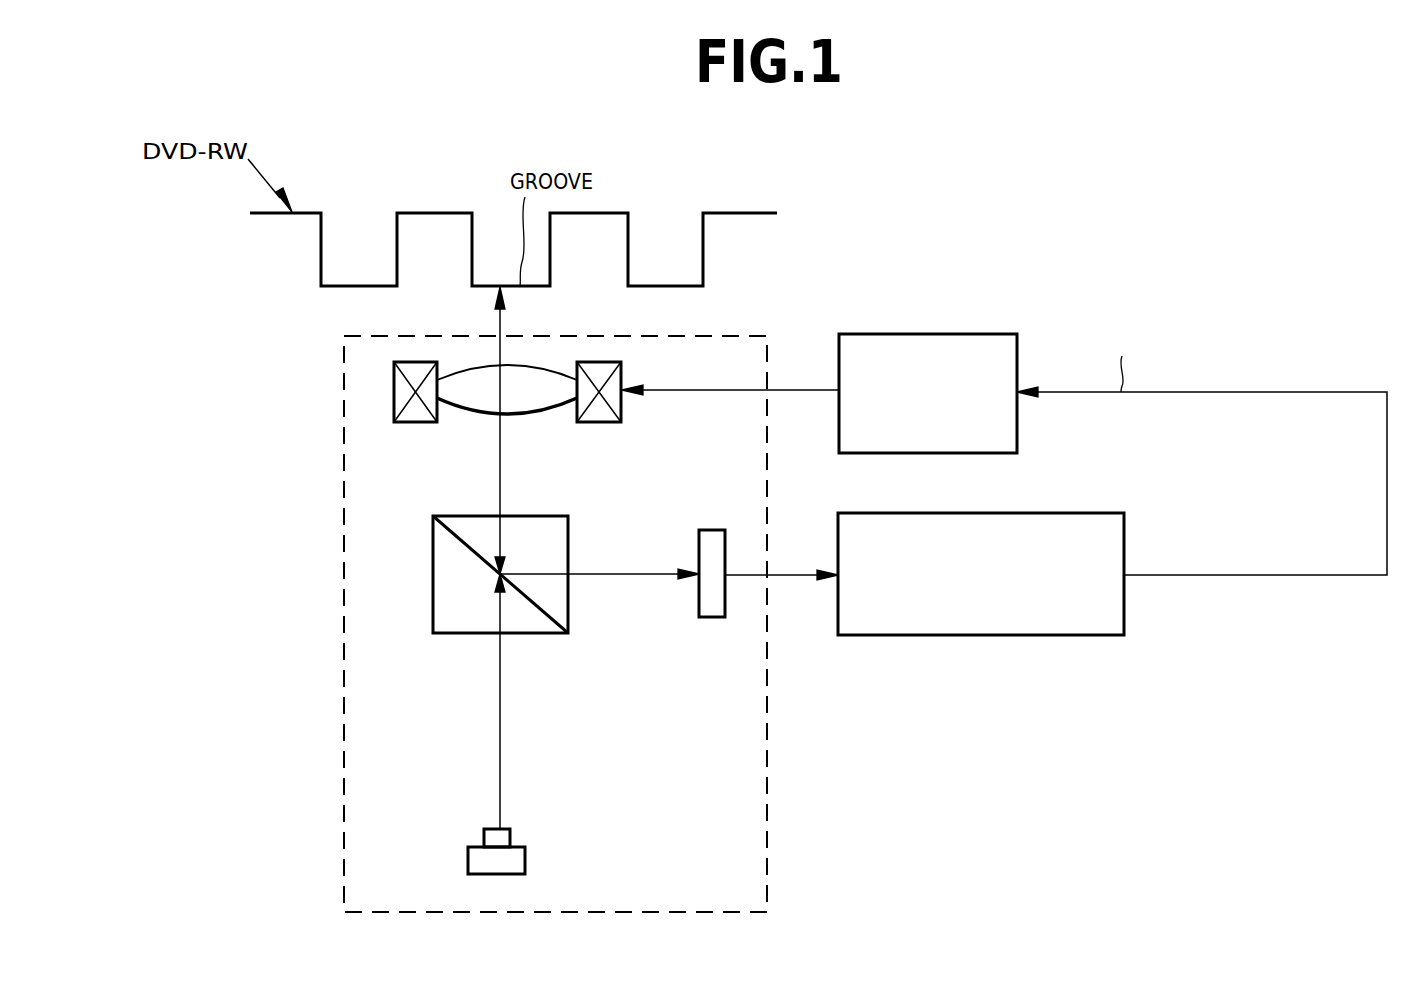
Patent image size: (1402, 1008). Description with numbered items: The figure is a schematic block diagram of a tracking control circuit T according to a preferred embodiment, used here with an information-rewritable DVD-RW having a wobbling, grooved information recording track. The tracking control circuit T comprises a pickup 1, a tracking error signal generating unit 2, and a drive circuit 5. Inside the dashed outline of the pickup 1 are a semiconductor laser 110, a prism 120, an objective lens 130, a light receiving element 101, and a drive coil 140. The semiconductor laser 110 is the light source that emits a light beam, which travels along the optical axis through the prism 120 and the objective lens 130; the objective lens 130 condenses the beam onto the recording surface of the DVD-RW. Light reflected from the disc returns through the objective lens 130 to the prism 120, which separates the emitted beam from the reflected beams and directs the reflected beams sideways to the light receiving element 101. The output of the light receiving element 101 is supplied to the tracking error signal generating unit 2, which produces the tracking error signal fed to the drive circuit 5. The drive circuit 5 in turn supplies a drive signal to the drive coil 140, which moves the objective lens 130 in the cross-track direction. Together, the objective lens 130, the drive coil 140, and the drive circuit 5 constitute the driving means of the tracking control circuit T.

The pickup 1 is at (767, 772).
The tracking error signal generating unit 2 is at (1085, 513).
The drive circuit 5 is at (967, 334).
The light receiving element 101 is at (700, 604).
The semiconductor laser 110 is at (518, 848).
The prism 120 is at (452, 628).
The objective lens 130 is at (532, 398).
The drive coil 140 is at (551, 358).
The tracking control circuit T is at (1110, 243).